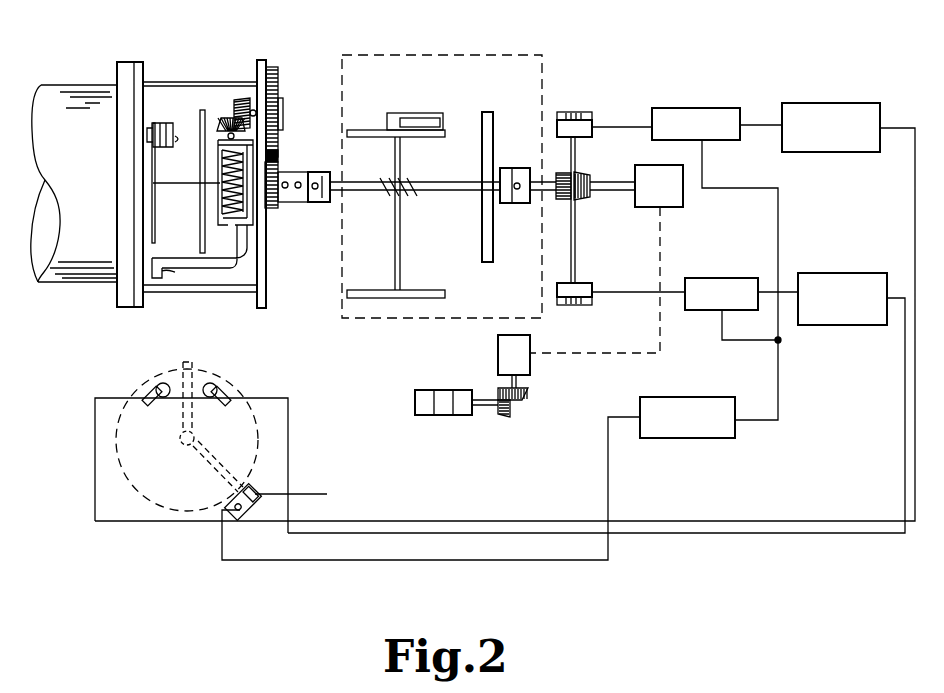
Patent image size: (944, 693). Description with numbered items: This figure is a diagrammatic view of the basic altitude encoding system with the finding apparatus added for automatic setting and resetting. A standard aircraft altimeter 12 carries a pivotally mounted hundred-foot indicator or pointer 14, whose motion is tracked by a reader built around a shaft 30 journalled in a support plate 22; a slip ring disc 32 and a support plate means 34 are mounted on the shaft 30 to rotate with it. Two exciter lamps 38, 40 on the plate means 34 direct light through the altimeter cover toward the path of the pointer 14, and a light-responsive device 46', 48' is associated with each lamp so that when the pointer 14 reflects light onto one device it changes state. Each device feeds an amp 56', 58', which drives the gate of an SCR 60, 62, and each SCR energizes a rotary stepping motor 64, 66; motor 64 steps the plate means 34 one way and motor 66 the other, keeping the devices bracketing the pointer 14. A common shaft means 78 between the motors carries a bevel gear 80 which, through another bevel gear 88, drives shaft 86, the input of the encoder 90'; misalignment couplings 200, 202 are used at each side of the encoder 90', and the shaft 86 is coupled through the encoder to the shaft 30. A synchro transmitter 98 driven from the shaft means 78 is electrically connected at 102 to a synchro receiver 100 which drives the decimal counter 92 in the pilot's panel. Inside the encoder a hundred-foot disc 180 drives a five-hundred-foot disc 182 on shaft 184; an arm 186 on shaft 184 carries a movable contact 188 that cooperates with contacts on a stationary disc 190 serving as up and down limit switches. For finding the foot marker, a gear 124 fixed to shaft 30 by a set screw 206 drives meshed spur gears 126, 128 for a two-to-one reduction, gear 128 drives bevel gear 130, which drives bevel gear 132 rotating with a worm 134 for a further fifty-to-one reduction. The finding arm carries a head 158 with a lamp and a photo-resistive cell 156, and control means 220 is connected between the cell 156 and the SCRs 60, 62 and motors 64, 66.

The aircraft altimeter 12 is at (80, 183).
The indicator or pointer 14 is at (187, 362).
The support plate 22 is at (266, 268).
The shaft 30 is at (176, 186).
The slip ring disc 32 is at (201, 110).
The support plate or plate means 34 is at (156, 232).
The light source (exciter lamp) 38 is at (211, 383).
The light source (exciter lamp) 40 is at (162, 383).
The light-responsive device 46' is at (244, 383).
The light-responsive device 48' is at (134, 383).
The amplifier 56' is at (841, 149).
The amplifier 58' is at (842, 283).
The SCR 60 is at (712, 108).
The SCR 62 is at (731, 278).
The rotary stepping motor 64 is at (588, 126).
The rotary stepping motor 66 is at (588, 289).
The common shaft means 78 is at (582, 236).
The bevel gear 80 is at (582, 174).
The shaft 86 is at (557, 198).
The bevel gear 88 is at (557, 175).
The encoder 90' is at (468, 170).
The decimal counter 92 is at (446, 390).
The synchro transmitter 98 is at (683, 207).
The synchro receiver 100 is at (500, 362).
The electrical connection 102 is at (668, 340).
The gear 124 is at (278, 172).
The spur gear 126 is at (278, 155).
The spur gear 128 is at (274, 68).
The bevel gear 130 is at (244, 98).
The bevel gear 132 is at (226, 118).
The worm 134 is at (220, 216).
The light-responsive means (photo-resistive cell) 156 is at (252, 513).
The head 158 is at (157, 279).
The 100 foot disc 180 is at (493, 130).
The 500 foot disc 182 is at (418, 290).
The shaft 184 is at (400, 236).
The arm 186 is at (420, 113).
The contact 188 is at (440, 127).
The stationary disc 190 is at (367, 130).
The misalignment coupling 200 is at (521, 158).
The misalignment coupling 202 is at (324, 211).
The set screw 206 is at (299, 189).
The control means 220 is at (692, 442).